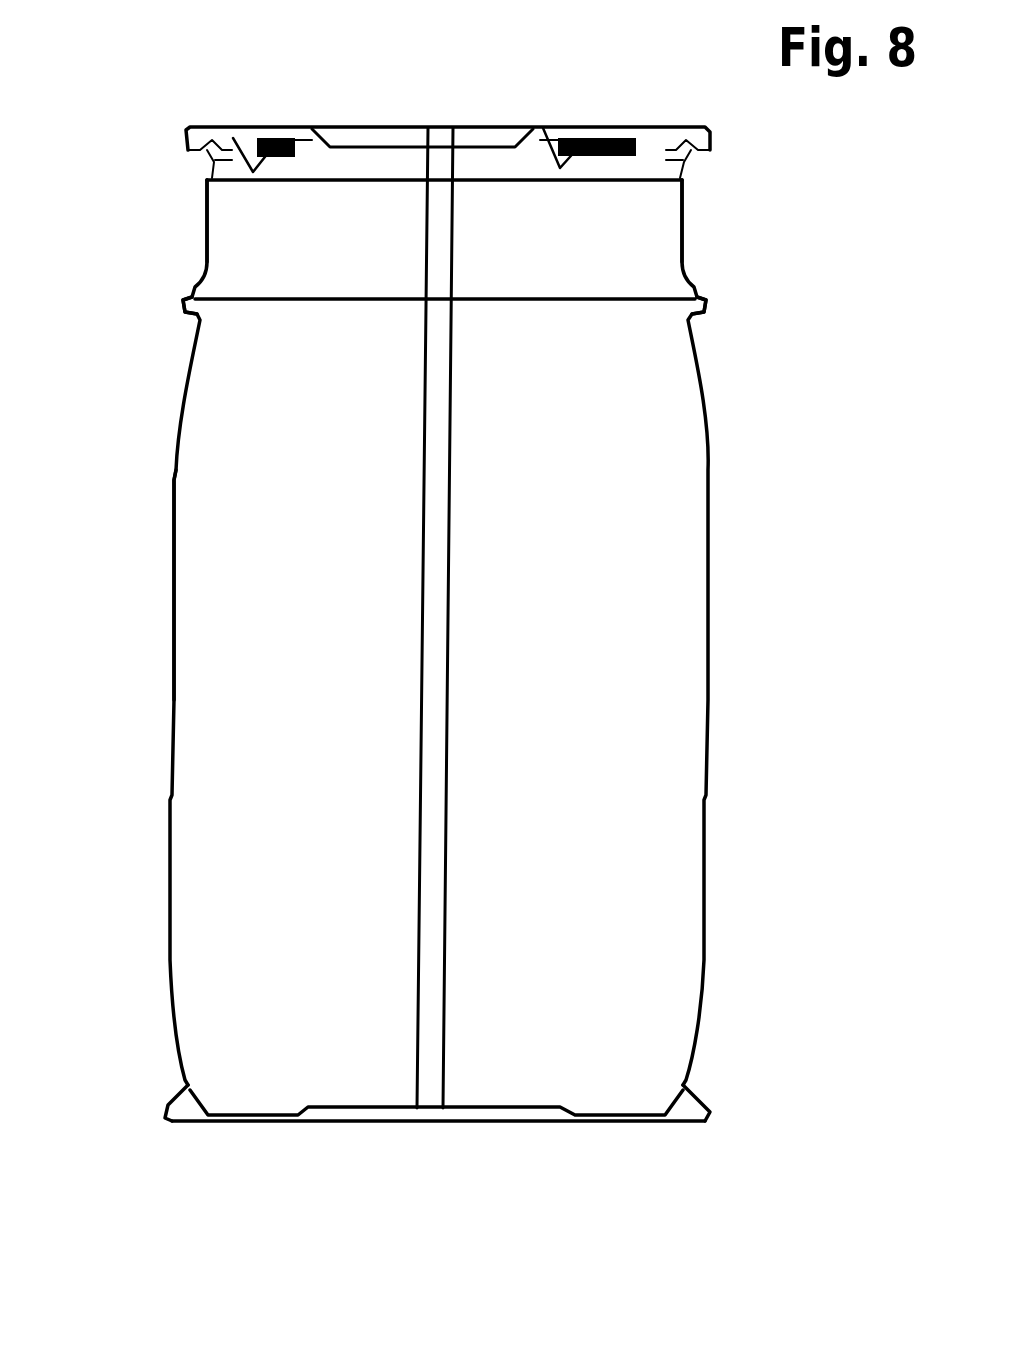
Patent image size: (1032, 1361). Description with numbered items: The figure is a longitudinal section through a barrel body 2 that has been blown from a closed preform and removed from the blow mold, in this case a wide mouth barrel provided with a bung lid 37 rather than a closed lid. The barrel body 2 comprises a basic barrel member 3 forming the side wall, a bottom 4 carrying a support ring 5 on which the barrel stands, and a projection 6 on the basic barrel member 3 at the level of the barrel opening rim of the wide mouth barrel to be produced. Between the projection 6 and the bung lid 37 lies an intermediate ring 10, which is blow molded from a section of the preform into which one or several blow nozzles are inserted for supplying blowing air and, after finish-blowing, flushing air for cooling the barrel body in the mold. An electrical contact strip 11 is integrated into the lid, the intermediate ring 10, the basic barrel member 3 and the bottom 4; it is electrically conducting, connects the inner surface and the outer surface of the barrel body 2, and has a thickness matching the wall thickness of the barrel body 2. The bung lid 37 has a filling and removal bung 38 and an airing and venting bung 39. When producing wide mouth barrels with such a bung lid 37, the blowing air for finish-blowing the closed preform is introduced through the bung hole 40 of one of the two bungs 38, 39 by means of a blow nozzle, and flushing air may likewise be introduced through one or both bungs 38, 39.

The barrel body 2 is at (720, 665).
The basic barrel member 3 is at (173, 615).
The bottom 4 is at (385, 1113).
The support ring 5 is at (170, 1112).
The projection 6 is at (705, 313).
The intermediate ring 10 is at (687, 232).
The electrical contact strip 11 is at (440, 570).
The bung lid 37 is at (398, 127).
The filling and removal bung 38 is at (543, 128).
The airing and venting bung 39 is at (233, 138).
The bung hole 40 is at (283, 138).